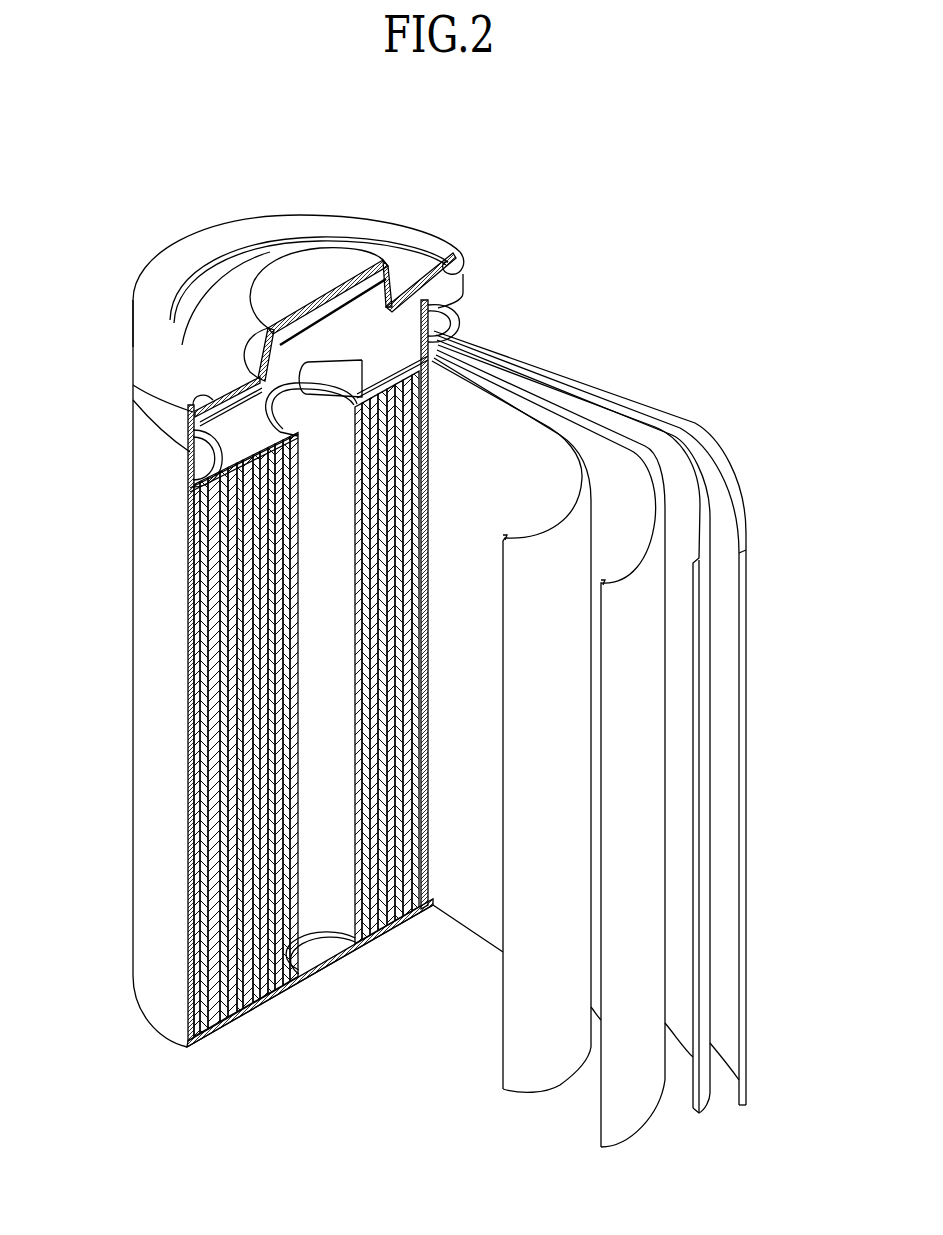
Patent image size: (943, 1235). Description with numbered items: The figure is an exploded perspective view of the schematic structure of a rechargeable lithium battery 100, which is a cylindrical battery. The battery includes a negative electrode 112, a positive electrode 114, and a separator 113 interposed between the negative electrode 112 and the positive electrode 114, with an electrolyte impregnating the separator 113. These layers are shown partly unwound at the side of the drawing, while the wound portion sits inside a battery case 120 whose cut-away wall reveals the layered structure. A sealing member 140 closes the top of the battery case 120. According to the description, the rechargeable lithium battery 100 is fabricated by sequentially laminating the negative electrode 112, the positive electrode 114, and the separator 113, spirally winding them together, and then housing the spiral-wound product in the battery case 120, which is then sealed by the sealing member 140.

The rechargeable lithium battery 100 is at (525, 201).
The negative electrode 112 is at (743, 540).
The separator 113 is at (542, 425).
The positive electrode 114 is at (625, 482).
The battery case 120 is at (147, 636).
The sealing member 140 is at (263, 283).